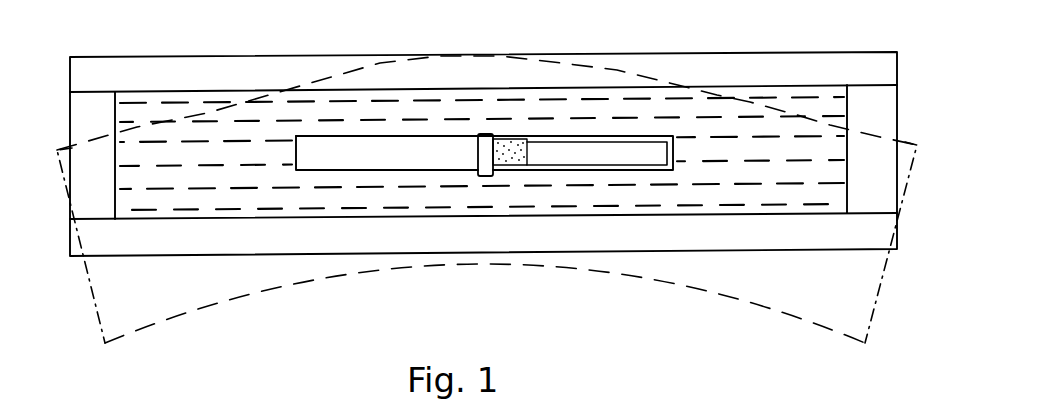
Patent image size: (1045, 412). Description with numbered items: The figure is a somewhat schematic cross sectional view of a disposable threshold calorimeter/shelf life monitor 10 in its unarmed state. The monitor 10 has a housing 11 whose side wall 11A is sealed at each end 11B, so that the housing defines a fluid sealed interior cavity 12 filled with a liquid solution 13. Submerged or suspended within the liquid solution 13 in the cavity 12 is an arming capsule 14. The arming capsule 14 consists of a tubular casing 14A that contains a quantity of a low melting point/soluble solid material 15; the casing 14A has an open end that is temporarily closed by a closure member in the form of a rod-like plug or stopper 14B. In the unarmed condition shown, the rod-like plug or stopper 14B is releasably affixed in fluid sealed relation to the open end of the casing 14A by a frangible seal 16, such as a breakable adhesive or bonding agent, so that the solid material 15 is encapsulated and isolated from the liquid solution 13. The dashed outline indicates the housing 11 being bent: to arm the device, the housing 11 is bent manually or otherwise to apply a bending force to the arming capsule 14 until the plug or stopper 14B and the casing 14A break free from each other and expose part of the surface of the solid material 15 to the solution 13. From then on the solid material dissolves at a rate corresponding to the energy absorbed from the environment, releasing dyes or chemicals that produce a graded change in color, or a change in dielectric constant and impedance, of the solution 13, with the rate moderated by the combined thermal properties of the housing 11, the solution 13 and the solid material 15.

The threshold calorimeter/shelf life monitor 10 is at (727, 40).
The housing 11 is at (225, 310).
The side wall 11A is at (713, 240).
The end 11B is at (95, 110).
The fluid sealed interior cavity 12 is at (238, 112).
The liquid solution 13 is at (402, 118).
The arming capsule 14 is at (514, 117).
The tubular casing 14A is at (587, 158).
The rod-like plug or stopper 14B is at (347, 163).
The low melting point/soluble solid material 15 is at (505, 166).
The frangible seal 16 is at (477, 158).